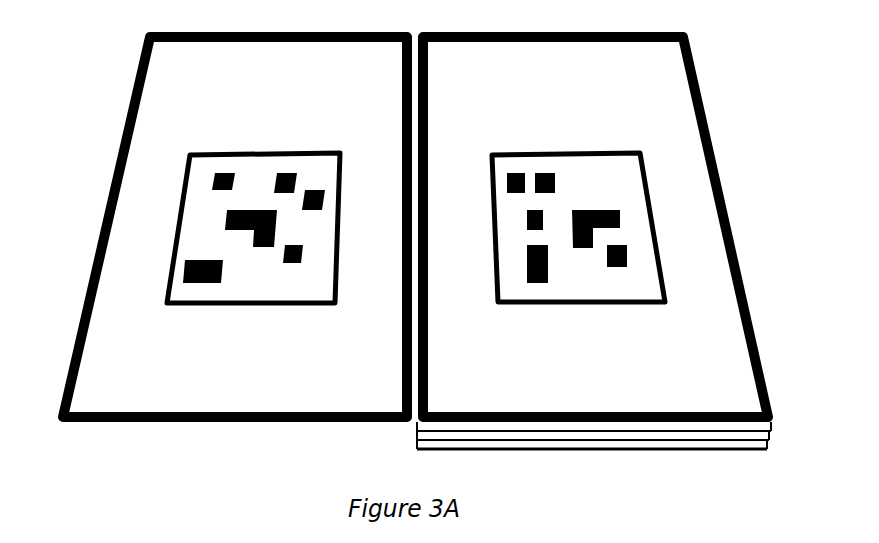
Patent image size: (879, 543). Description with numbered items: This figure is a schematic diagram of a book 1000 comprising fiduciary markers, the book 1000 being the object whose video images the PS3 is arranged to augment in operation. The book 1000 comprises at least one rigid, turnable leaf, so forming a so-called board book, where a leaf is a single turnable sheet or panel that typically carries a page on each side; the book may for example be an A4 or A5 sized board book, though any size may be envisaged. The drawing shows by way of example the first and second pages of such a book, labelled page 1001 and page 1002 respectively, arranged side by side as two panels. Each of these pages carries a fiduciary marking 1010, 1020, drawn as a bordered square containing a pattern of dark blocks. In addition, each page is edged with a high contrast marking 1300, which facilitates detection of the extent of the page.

The book 1000 is at (242, 476).
The page 1 1001 is at (218, 227).
The page 2 1002 is at (616, 227).
The fiduciary marking 1010 is at (166, 192).
The fiduciary marking 1020 is at (664, 190).
The high contrast marking 1300 is at (613, 237).